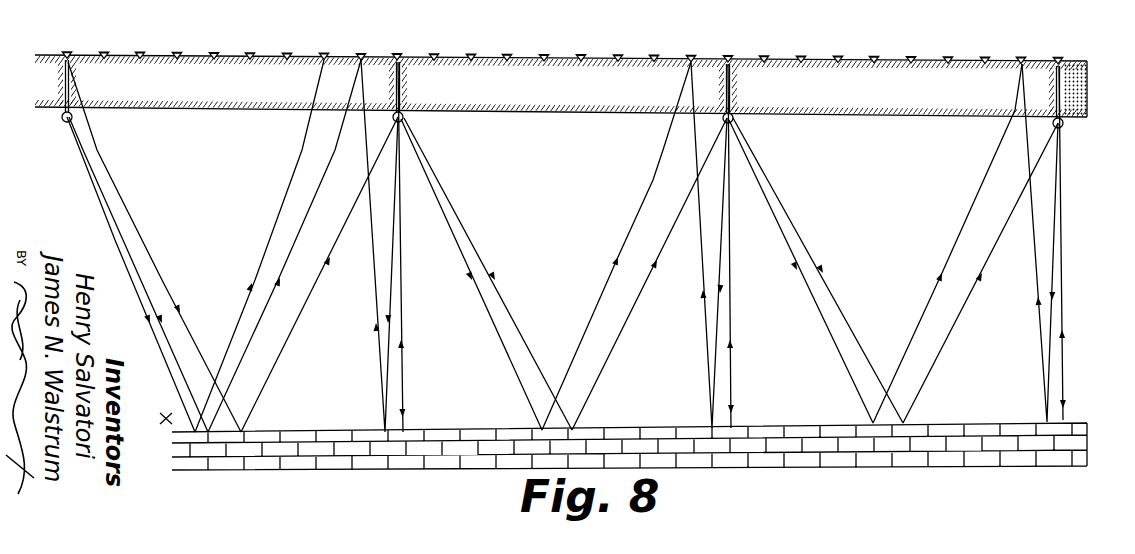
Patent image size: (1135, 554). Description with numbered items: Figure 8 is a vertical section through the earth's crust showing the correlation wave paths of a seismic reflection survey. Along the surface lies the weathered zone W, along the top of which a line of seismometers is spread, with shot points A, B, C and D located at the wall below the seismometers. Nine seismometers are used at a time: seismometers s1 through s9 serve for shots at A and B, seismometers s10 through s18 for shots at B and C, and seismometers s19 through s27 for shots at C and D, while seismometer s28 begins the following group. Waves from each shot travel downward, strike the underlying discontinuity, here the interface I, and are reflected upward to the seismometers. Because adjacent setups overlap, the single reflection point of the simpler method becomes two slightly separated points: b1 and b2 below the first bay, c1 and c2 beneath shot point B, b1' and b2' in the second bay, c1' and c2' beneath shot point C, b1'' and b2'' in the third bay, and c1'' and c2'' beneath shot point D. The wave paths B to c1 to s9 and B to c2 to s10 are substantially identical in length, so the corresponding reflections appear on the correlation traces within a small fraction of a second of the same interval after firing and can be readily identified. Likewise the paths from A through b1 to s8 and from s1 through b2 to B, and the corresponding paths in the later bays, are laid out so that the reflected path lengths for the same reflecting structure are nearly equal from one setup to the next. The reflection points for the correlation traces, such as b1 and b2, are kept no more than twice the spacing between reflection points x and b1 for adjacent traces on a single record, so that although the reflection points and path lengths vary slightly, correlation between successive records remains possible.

The weathered zone W is at (1077, 88).
The interface I is at (890, 450).
The seismometer s1 is at (67, 52).
The seismometer s8 is at (325, 52).
The seismometer s9 is at (363, 53).
The seismometer s10 is at (400, 53).
The seismometer s18 is at (692, 54).
The seismometer s19 is at (731, 55).
The seismometer s27 is at (1022, 56).
The seismometer s28 is at (1061, 57).
The shot point A is at (63, 120).
The shot point B is at (406, 118).
The shot point C is at (735, 118).
The shot point D is at (1065, 123).
The reflection point b1 is at (195, 246).
The reflection point b2 is at (233, 247).
The reflection point c1 is at (375, 246).
The reflection point c2 is at (416, 247).
The reflection point b1' is at (546, 246).
The reflection point b2' is at (565, 274).
The reflection point c1' is at (704, 245).
The reflection point c2' is at (749, 246).
The reflection point b1'' is at (875, 245).
The reflection point b2'' is at (895, 272).
The reflection point c1'' is at (1037, 245).
The reflection point c2'' is at (1078, 246).
The reflection point x is at (194, 430).